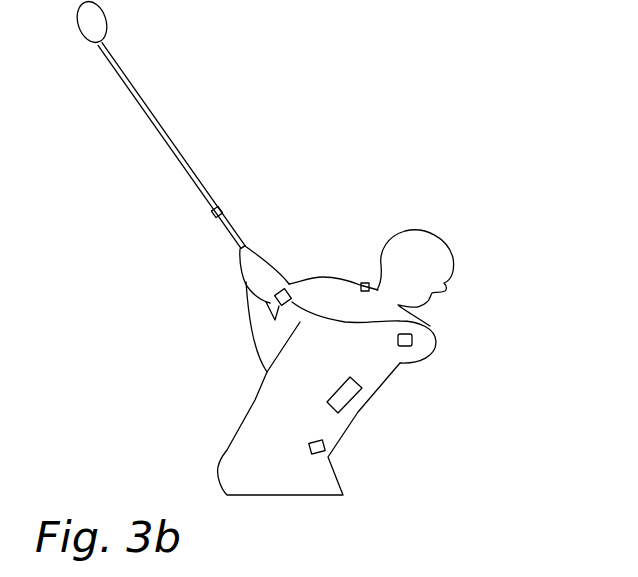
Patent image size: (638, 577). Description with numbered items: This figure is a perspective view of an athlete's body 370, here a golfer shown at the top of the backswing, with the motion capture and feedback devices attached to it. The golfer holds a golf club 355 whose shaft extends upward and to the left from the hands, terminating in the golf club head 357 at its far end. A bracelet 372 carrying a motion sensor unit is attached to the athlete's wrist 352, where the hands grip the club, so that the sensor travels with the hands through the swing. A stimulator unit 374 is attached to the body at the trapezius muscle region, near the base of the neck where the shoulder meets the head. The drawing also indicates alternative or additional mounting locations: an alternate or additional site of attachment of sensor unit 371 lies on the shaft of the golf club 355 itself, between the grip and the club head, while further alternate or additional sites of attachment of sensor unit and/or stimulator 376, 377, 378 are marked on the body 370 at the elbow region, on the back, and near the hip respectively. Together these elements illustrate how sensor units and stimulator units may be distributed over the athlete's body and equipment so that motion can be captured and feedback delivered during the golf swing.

The wrist 352 is at (287, 288).
The golf club 355 is at (192, 178).
The golf club head 357 is at (92, 14).
The body 370 is at (382, 373).
The alternate or additional site of attachment of sensor unit 371 is at (212, 212).
The bracelet with motion sensor unit 372 is at (275, 303).
The attached stimulator unit 374 is at (364, 283).
The further alternate or additional site of attachment of sensor unit and/or stimula 376 is at (413, 338).
The further alternate or additional site of attachment of sensor unit and/or stimula 377 is at (340, 402).
The further alternate or additional site of attachment of sensor unit and/or stimula 378 is at (327, 449).